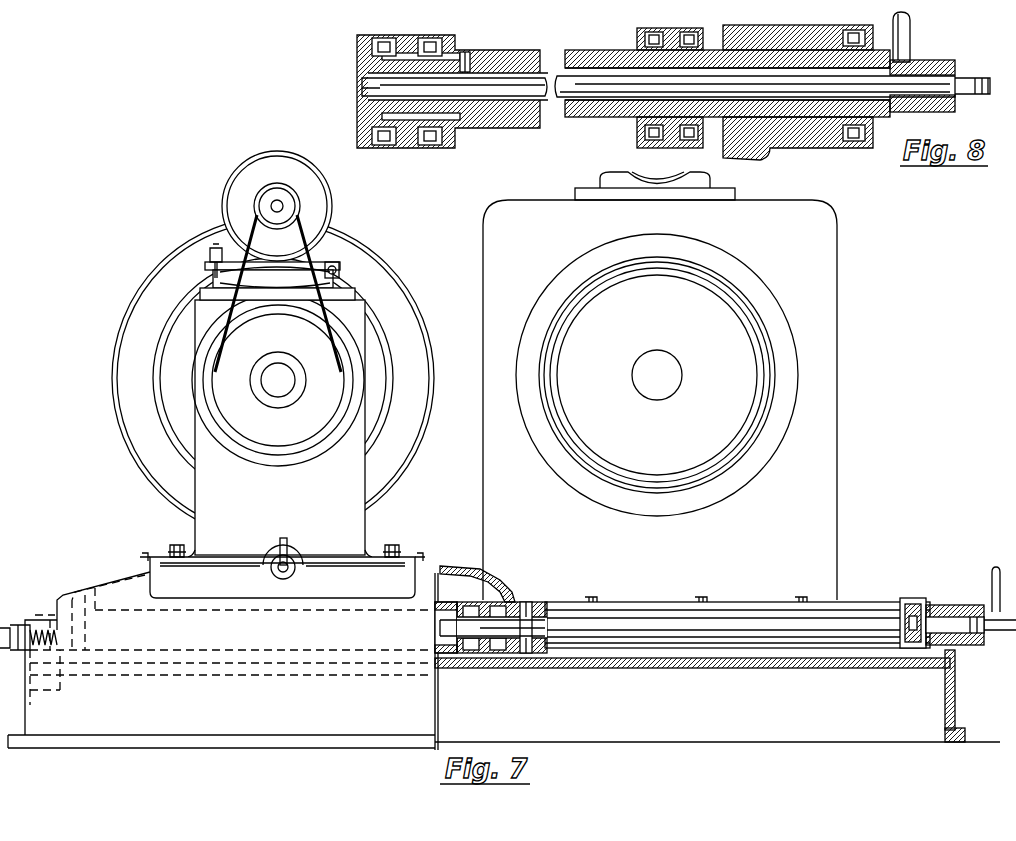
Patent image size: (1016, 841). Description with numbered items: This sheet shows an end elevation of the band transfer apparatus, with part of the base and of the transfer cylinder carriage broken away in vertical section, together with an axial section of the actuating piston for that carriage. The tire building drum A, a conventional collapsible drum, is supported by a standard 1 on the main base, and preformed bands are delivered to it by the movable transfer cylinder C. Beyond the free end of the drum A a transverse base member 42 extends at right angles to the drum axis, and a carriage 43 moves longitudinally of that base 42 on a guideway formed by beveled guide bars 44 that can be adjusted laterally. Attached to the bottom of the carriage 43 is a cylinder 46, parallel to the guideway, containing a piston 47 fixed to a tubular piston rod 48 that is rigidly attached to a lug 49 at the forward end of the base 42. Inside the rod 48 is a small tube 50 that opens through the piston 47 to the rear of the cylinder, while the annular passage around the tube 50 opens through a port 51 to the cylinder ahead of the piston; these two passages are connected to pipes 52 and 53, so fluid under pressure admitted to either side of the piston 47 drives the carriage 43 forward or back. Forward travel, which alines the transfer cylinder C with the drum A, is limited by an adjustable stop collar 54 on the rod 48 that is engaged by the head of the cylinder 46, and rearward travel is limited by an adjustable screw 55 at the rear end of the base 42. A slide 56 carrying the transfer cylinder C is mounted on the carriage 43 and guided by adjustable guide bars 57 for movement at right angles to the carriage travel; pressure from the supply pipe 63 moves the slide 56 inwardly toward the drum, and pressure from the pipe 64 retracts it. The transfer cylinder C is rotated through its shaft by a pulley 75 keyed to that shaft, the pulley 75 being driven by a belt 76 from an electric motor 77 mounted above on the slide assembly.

In FIG. 7, the standard 1 is at (828, 240).
In FIG. 7, the tire building drum A is at (800, 360).
In FIG. 7, the transfer cylinder C is at (152, 286).
In FIG. 7, the transverse base member 42 is at (957, 712).
In FIG. 7, the carriage 43 is at (488, 582).
In FIG. 7, the beveled guide bars 44 is at (666, 602).
In FIG. 7, the cylinder 46 is at (450, 656).
In FIG. 8, the piston 47 is at (405, 140).
In FIG. 7, the piston 47 is at (485, 656).
In FIG. 7, the tubular piston rod 48 is at (745, 616).
In FIG. 8, the lug 49 is at (825, 145).
In FIG. 7, the lug 49 is at (950, 605).
In FIG. 8, the small tube 50 is at (565, 100).
In FIG. 7, the small tube 50 is at (548, 622).
In FIG. 8, the port 51 is at (468, 52).
In FIG. 7, the port 51 is at (524, 604).
In FIG. 8, the pipe 52 is at (960, 72).
In FIG. 8, the pipe 53 is at (912, 35).
In FIG. 7, the pipe 53 is at (1001, 580).
In FIG. 8, the adjustable stop collar 54 is at (640, 36).
In FIG. 7, the adjustable stop collar 54 is at (905, 604).
In FIG. 7, the screw 55 is at (2, 622).
In FIG. 7, the slide 56 is at (235, 514).
In FIG. 7, the adjustable guide bars 57 is at (176, 545).
In FIG. 7, the pressure supply pipe 63 is at (296, 570).
In FIG. 7, the pipe 64 is at (289, 545).
In FIG. 7, the pulley 75 is at (345, 400).
In FIG. 7, the belt 76 is at (215, 315).
In FIG. 7, the electric motor 77 is at (268, 170).